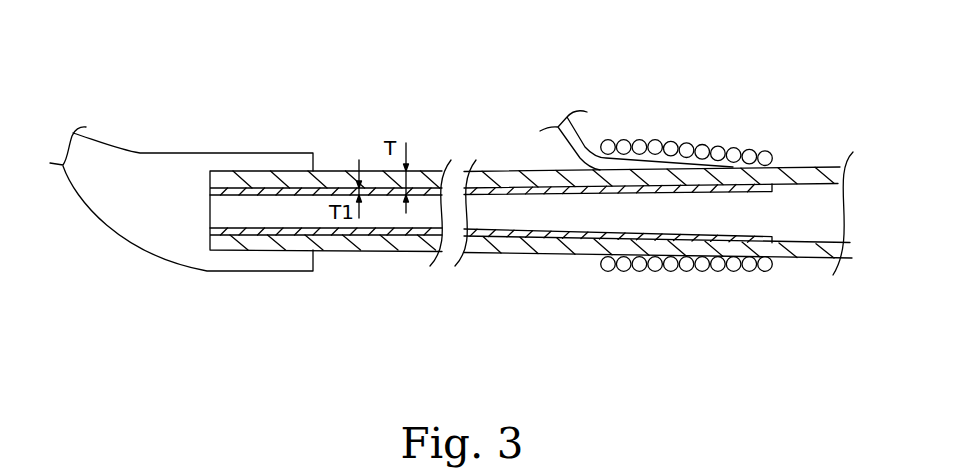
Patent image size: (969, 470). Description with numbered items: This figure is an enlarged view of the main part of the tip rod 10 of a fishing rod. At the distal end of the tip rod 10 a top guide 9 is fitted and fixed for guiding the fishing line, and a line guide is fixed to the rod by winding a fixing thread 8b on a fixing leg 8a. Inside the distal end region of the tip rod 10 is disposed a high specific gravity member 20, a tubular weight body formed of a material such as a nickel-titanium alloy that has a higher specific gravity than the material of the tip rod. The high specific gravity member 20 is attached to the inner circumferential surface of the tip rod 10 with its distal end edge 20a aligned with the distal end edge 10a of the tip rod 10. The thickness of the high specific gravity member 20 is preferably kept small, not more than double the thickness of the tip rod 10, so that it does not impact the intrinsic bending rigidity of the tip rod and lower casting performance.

The top guide 9 is at (139, 140).
The distal end edge of the tip rod 10a is at (212, 188).
The distal end edge of the high specific gravity member 20a is at (210, 231).
The high specific gravity member 20 is at (509, 189).
The tip rod 10 is at (833, 170).
The fixing leg 8a is at (643, 160).
The fixing thread 8b is at (735, 150).